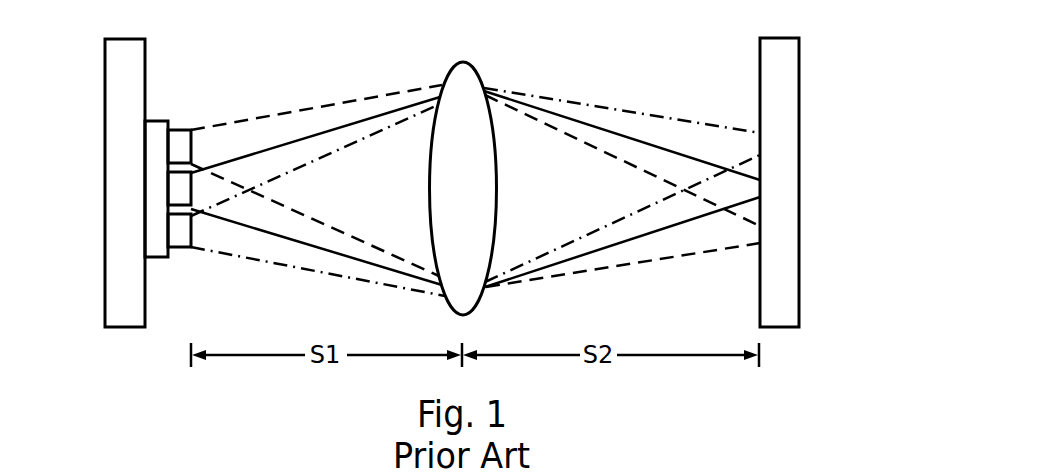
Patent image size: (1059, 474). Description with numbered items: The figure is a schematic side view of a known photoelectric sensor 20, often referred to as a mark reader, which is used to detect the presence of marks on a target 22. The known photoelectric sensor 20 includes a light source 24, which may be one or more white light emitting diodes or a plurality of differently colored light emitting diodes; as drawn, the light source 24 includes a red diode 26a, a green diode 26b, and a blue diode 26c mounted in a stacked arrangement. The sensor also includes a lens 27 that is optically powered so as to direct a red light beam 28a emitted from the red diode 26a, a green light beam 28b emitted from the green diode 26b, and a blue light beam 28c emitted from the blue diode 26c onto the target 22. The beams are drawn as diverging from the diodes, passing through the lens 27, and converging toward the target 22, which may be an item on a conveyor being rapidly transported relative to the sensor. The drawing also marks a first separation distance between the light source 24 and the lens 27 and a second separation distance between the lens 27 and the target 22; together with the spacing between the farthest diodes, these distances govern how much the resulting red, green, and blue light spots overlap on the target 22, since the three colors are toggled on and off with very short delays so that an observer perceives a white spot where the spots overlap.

The known photoelectric sensor 20 is at (557, 17).
The target 22 is at (804, 170).
The light source 24 is at (181, 156).
The red diode 26a is at (207, 255).
The green diode 26b is at (113, 161).
The blue diode 26c is at (206, 123).
The lens 27 is at (445, 174).
The red light beam 28a is at (475, 202).
The green light beam 28b is at (475, 174).
The blue light beam 28c is at (475, 174).